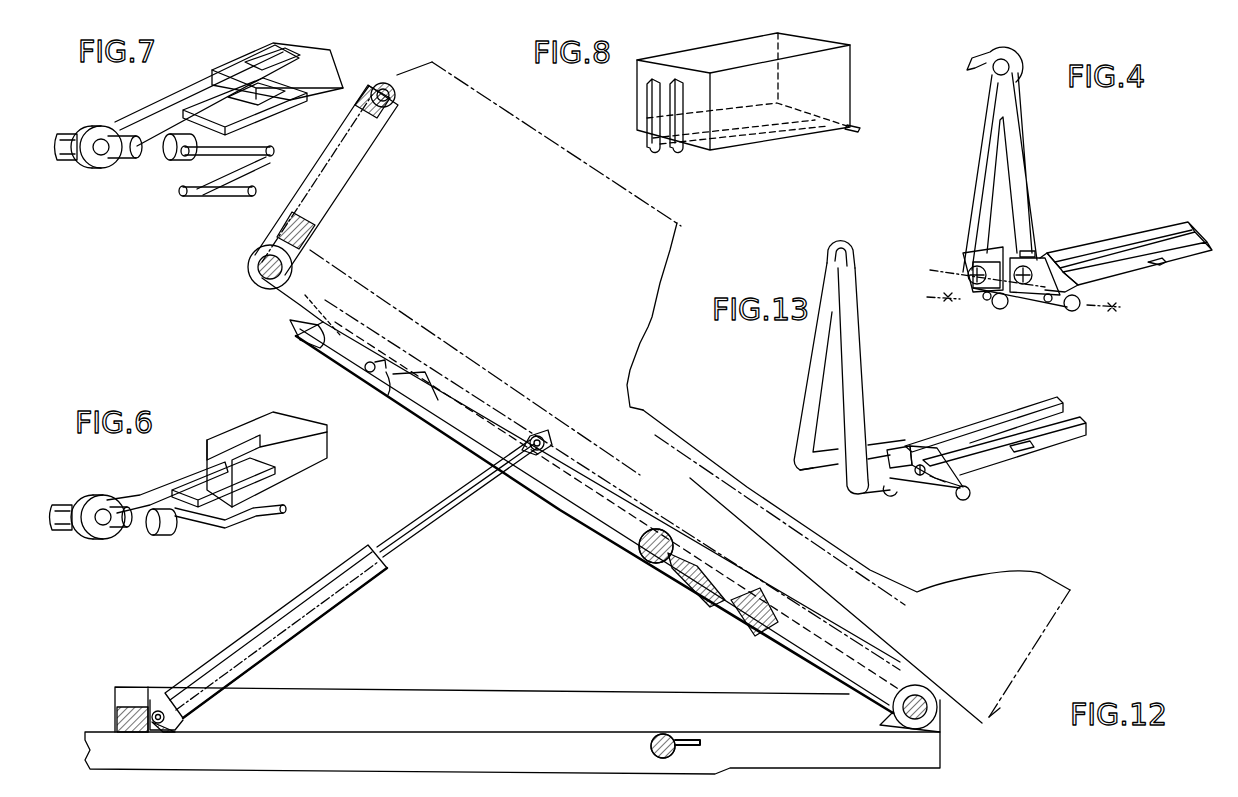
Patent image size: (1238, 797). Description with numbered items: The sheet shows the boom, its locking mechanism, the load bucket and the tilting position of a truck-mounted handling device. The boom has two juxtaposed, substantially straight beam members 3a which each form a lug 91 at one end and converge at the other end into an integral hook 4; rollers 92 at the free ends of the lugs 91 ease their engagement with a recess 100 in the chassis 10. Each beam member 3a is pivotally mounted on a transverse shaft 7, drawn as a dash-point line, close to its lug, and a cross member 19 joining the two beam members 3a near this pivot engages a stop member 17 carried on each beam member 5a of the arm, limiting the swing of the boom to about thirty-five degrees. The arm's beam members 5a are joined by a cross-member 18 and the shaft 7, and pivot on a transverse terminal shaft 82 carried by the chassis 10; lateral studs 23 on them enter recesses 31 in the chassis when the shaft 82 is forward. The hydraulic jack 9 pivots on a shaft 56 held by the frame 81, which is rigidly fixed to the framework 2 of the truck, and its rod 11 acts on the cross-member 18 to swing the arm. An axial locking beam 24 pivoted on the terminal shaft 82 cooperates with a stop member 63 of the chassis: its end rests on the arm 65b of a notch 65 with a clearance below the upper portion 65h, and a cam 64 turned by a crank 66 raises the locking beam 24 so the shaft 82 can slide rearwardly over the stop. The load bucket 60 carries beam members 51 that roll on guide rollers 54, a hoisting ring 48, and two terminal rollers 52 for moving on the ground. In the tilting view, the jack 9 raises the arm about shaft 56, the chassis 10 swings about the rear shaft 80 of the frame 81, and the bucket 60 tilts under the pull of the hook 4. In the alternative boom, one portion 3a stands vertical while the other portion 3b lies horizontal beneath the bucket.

In FIG. 12, the framework 2 is at (443, 765).
In FIG. 4, the beam members 3a is at (992, 180).
In FIG. 13, the beam members 3a is at (815, 385).
In FIG. 12, the beam members 3a is at (326, 180).
In FIG. 13, the boom portion 3b is at (830, 466).
In FIG. 4, the hook 4 is at (994, 73).
In FIG. 12, the hook 4 is at (398, 105).
In FIG. 4, the beam members 5a is at (1158, 230).
In FIG. 13, the beam members 5a is at (995, 436).
In FIG. 12, the beam members 5a is at (430, 420).
In FIG. 4, the transverse shaft 7 is at (950, 272).
In FIG. 12, the hydraulic jack 9 is at (288, 625).
In FIG. 12, the chassis 10 is at (296, 318).
In FIG. 12, the rod 11 is at (440, 515).
In FIG. 4, the stop member 17 is at (1050, 252).
In FIG. 13, the stop member 17 is at (928, 447).
In FIG. 12, the cross-member 18 is at (534, 450).
In FIG. 4, the cross member 19 is at (988, 252).
In FIG. 13, the cross member 19 is at (890, 448).
In FIG. 4, the lateral studs 23 is at (1155, 266).
In FIG. 13, the lateral studs 23 is at (1020, 455).
In FIG. 12, the lateral studs 23 is at (362, 372).
In FIG. 7, the locking beam 24 is at (180, 104).
In FIG. 6, the locking beam 24 is at (160, 480).
In FIG. 12, the locking beam 24 is at (695, 580).
In FIG. 12, the recesses 31 is at (388, 390).
In FIG. 8, the hoisting ring 48 is at (660, 112).
In FIG. 8, the beam members 51 is at (700, 142).
In FIG. 8, the terminal rollers 52 is at (862, 128).
In FIG. 12, the guide rollers 54 is at (998, 710).
In FIG. 12, the shaft 56 is at (160, 704).
In FIG. 8, the load bucket 60 is at (815, 97).
In FIG. 12, the load bucket 60 is at (1015, 630).
In FIG. 7, the stop member 63 is at (318, 60).
In FIG. 12, the stop member 63 is at (738, 625).
In FIG. 7, the cam 64 is at (168, 160).
In FIG. 6, the cam 64 is at (165, 537).
In FIG. 12, the cam 64 is at (655, 760).
In FIG. 7, the notch 65 is at (268, 100).
In FIG. 6, the notch 65 is at (265, 486).
In FIG. 7, the arm of notch 65b is at (240, 108).
In FIG. 7, the upper portion of notch 65h is at (280, 80).
In FIG. 7, the crank 66 is at (235, 193).
In FIG. 6, the crank 66 is at (270, 520).
In FIG. 12, the crank 66 is at (693, 755).
In FIG. 12, the shaft 80 is at (940, 725).
In FIG. 12, the frame 81 is at (110, 722).
In FIG. 7, the transverse terminal shaft 82 is at (64, 160).
In FIG. 6, the transverse terminal shaft 82 is at (58, 532).
In FIG. 12, the transverse terminal shaft 82 is at (642, 560).
In FIG. 4, the lug 91 is at (987, 300).
In FIG. 13, the lug 91 is at (937, 482).
In FIG. 12, the lug 91 is at (270, 295).
In FIG. 4, the rollers 92 is at (1002, 310).
In FIG. 13, the rollers 92 is at (972, 490).
In FIG. 12, the rollers 92 is at (298, 343).
In FIG. 12, the recess 100 is at (309, 337).